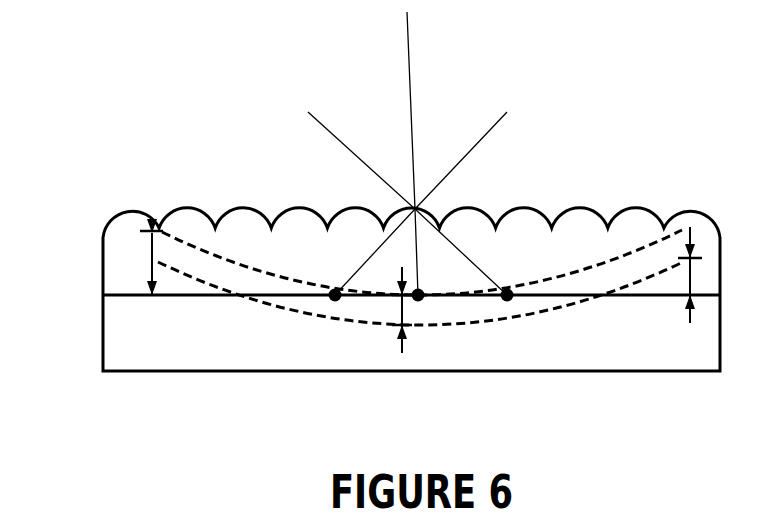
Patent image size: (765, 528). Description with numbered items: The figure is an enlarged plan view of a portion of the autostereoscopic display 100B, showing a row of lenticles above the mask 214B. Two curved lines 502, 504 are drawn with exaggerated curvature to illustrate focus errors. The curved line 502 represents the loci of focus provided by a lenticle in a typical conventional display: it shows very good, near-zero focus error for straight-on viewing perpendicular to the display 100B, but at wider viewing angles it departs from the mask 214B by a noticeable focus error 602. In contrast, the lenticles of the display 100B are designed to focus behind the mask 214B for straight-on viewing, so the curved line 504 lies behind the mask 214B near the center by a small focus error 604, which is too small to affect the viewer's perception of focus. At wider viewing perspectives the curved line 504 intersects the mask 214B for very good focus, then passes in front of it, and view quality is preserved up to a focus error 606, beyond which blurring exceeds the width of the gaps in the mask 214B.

The autostereoscopic display 100B is at (464, 207).
The mask 214B is at (660, 296).
The curved line 502 is at (241, 270).
The curved line 504 is at (455, 327).
The focus error 602 is at (152, 265).
The focus error 604 is at (397, 312).
The focus error 606 is at (690, 277).